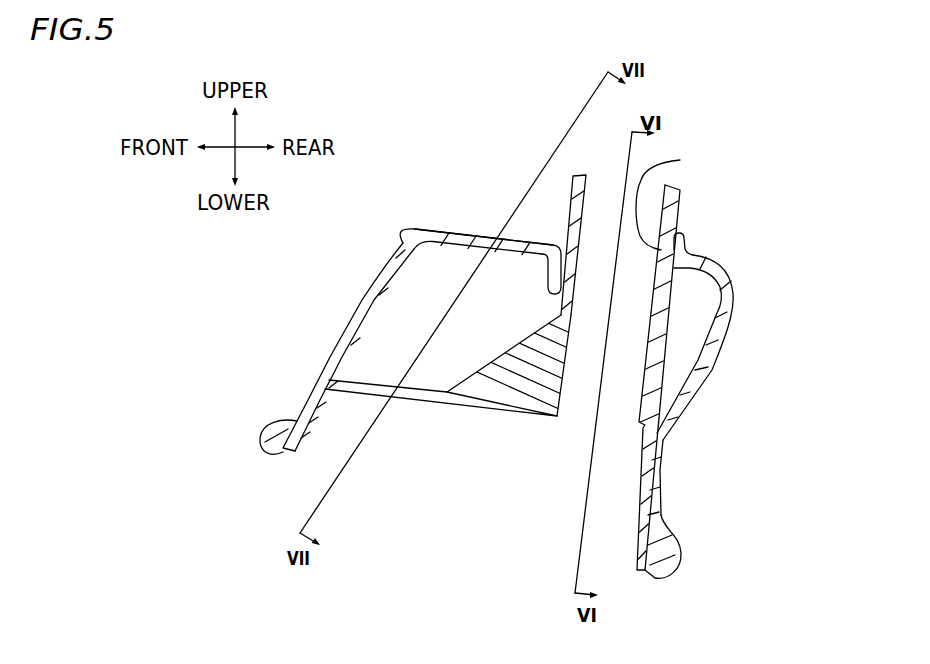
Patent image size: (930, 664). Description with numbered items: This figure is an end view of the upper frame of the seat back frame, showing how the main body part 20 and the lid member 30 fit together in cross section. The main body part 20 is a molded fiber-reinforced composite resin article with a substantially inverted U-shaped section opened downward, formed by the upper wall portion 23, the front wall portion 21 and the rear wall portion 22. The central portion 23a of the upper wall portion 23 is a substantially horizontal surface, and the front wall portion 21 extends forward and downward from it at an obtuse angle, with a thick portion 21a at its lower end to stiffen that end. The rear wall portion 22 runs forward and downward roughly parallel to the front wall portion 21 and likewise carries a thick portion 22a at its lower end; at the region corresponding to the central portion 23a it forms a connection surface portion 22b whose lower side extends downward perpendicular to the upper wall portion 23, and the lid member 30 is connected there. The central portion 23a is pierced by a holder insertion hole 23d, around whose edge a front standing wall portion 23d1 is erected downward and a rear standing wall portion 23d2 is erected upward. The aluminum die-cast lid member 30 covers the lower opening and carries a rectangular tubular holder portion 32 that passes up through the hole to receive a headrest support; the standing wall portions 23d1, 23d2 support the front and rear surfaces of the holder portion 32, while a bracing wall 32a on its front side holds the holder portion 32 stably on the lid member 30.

The main body part 20 is at (536, 237).
The front wall portion 21 is at (350, 318).
The thick portion 21a is at (270, 457).
The rear wall portion 22 is at (712, 373).
The thick portion 22a is at (662, 557).
The connection surface portion 22b is at (667, 482).
The upper wall portion 23 is at (461, 231).
The central portion 23a is at (487, 231).
The holder insertion hole 23d is at (680, 160).
The front standing wall portion 23d1 is at (547, 268).
The rear standing wall portion 23d2 is at (683, 248).
The lid member 30 is at (418, 400).
The holder portion 32 is at (681, 208).
The bracing wall 32a is at (500, 335).